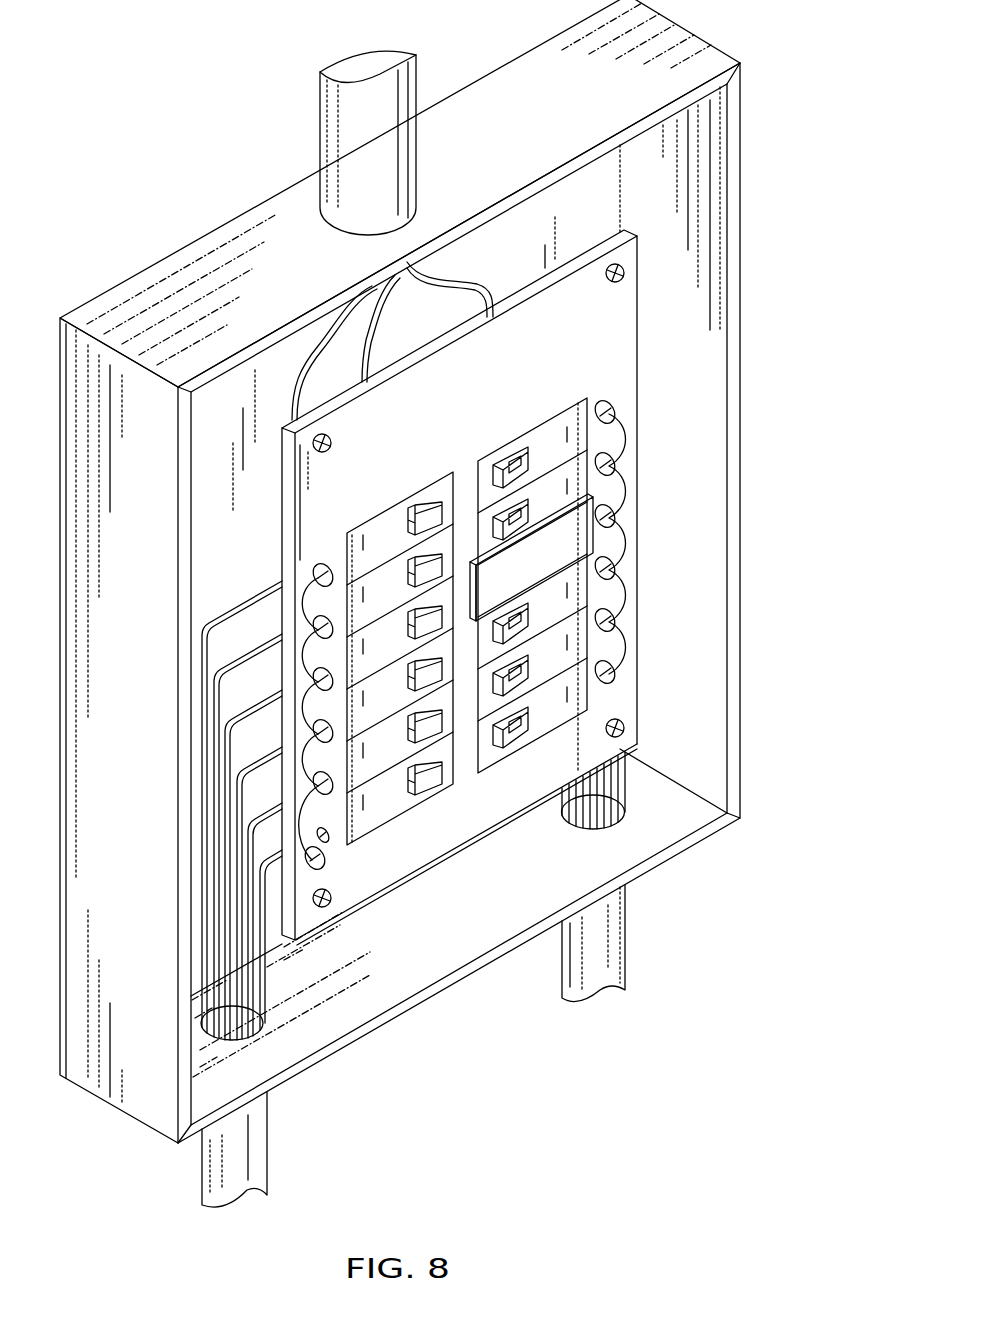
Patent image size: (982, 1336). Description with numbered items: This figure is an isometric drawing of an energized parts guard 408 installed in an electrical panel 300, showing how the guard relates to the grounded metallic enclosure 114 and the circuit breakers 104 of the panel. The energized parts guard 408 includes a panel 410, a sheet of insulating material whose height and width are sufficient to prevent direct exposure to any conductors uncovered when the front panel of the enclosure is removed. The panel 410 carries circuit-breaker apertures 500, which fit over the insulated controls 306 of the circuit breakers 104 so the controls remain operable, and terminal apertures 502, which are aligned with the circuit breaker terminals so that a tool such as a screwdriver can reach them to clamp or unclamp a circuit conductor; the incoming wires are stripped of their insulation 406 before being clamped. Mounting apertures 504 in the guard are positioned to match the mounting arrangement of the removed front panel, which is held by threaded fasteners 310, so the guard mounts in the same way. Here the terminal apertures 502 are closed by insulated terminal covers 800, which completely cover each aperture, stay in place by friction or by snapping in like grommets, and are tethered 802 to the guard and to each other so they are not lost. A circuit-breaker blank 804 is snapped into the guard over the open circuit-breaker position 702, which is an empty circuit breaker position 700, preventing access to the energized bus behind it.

The circuit breakers 104 is at (402, 504).
The metallic enclosure 114 is at (741, 250).
The electrical panel 300 is at (192, 243).
The insulated controls 306 is at (518, 448).
The threaded fasteners 310 is at (492, 585).
The insulation 406 is at (484, 292).
The energized parts guard 408 is at (523, 810).
The panel 410 is at (483, 832).
The circuit-breaker apertures 500 is at (400, 660).
The terminal apertures 502 is at (320, 833).
The mounting apertures 504 is at (624, 726).
The empty circuit breaker position 700 is at (202, 723).
The open circuit-breaker position 702 is at (585, 533).
The insulated terminal covers 800 is at (647, 532).
The tethers 802 is at (630, 483).
The circuit-breaker blank 804 is at (588, 557).